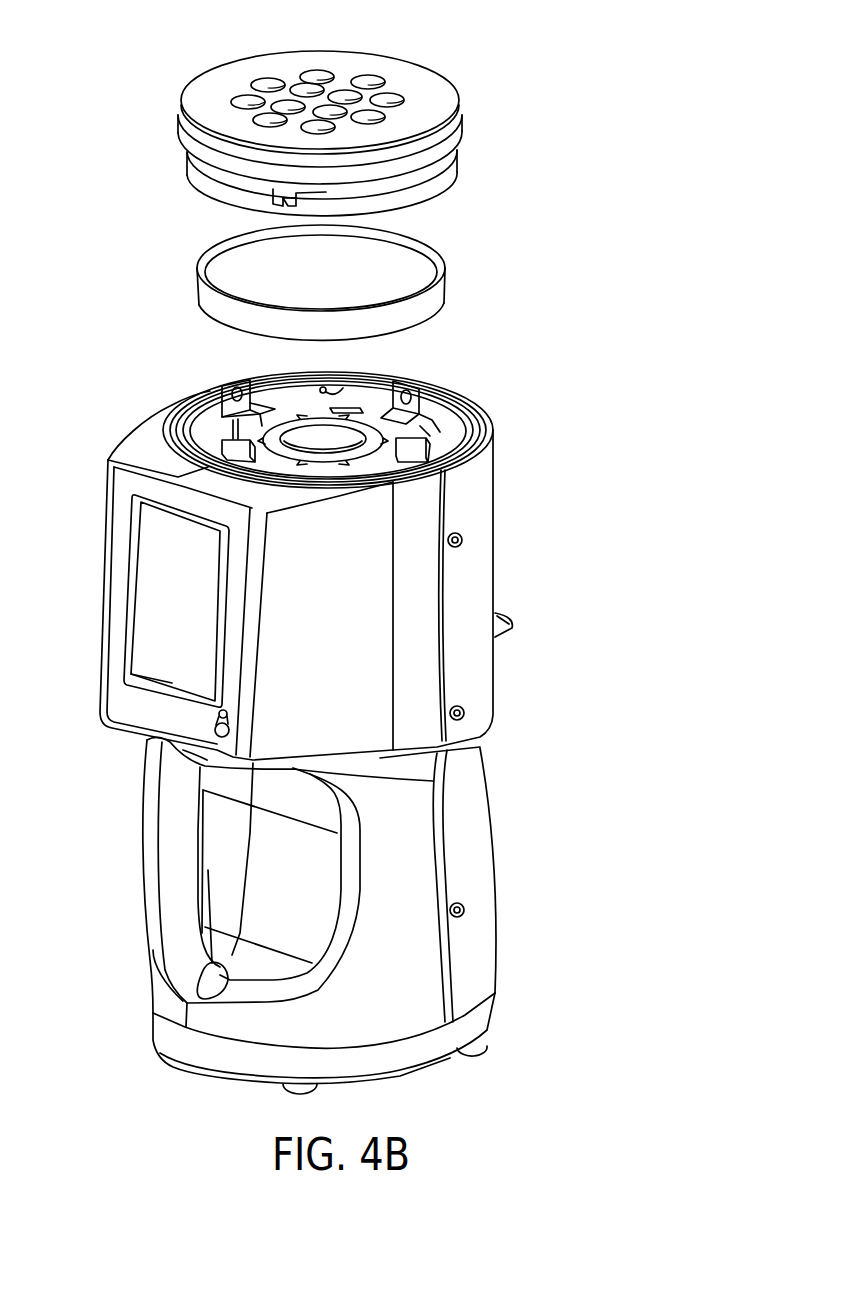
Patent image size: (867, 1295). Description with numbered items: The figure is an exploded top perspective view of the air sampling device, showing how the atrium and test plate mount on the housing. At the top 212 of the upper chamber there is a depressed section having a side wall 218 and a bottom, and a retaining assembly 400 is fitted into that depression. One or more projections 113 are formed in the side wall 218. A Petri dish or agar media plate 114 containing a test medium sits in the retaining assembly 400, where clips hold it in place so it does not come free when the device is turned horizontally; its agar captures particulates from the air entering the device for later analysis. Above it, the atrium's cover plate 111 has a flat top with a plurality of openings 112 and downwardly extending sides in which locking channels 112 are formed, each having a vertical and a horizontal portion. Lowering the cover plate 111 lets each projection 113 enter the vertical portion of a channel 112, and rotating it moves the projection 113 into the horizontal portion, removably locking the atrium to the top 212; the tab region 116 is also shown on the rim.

The retaining assembly 400 is at (157, 388).
The cover plate 111 is at (440, 98).
The openings / locking channels 112 is at (346, 92).
The media plate 114 is at (428, 298).
The projection 113 is at (362, 380).
The right mounting tab 116 is at (436, 436).
The side wall 218 is at (270, 397).
The top 212 is at (148, 445).